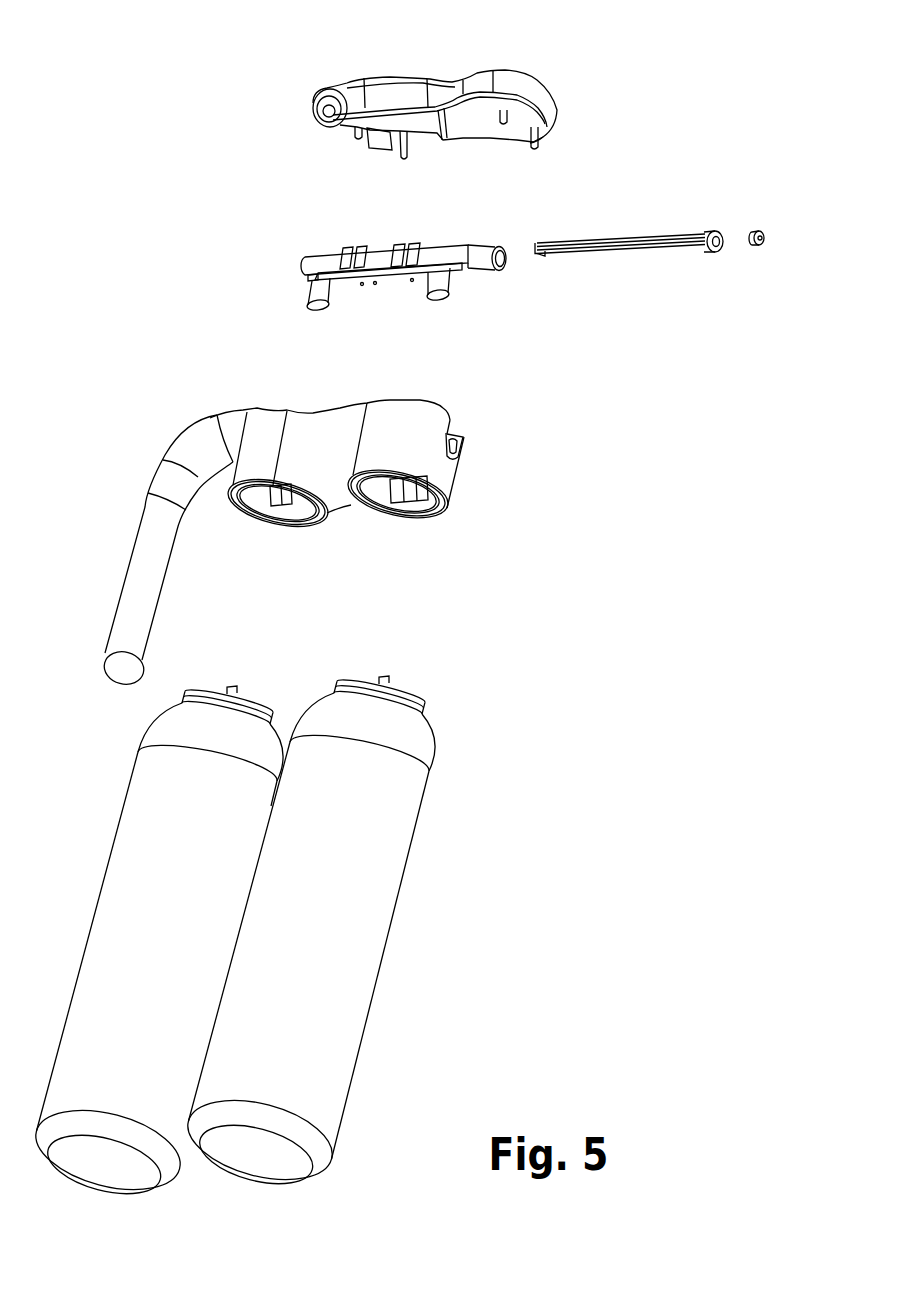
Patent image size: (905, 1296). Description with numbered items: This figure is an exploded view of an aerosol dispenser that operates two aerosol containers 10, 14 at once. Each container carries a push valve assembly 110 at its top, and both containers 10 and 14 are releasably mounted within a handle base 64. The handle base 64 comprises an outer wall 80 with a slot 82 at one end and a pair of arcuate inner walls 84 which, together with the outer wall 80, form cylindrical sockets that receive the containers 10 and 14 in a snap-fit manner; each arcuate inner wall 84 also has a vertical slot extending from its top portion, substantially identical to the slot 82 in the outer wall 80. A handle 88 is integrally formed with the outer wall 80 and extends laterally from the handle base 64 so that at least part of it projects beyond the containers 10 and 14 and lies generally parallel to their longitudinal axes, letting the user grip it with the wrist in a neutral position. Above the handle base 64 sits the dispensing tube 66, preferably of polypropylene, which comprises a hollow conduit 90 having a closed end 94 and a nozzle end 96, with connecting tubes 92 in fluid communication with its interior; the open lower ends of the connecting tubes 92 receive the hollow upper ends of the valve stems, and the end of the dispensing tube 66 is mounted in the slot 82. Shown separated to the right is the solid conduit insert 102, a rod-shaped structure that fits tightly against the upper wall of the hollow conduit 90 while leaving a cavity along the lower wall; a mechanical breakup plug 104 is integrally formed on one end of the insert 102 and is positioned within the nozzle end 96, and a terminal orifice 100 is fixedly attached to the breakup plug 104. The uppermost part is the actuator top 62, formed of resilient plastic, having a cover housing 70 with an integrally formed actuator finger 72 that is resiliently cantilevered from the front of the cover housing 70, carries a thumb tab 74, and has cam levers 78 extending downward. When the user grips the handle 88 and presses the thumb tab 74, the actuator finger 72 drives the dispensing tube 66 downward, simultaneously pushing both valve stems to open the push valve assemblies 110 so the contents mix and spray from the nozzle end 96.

The aerosol container 10 is at (143, 783).
The aerosol container 14 is at (400, 852).
The actuator top 62 is at (520, 70).
The handle base 64 is at (445, 482).
The dispensing tube 66 is at (300, 252).
The cover housing 70 is at (540, 97).
The actuator finger 72 is at (340, 88).
The thumb tab 74 is at (329, 112).
The cam levers 78 is at (450, 128).
The outer wall 80 is at (442, 470).
The slot 82 is at (455, 432).
The arcuate inner walls 84 is at (328, 499).
The handle 88 is at (155, 545).
The hollow conduit 90 is at (499, 254).
The connecting tubes 92 is at (318, 290).
The closed end 94 is at (300, 268).
The nozzle end 96 is at (503, 267).
The terminal orifice 100 is at (762, 232).
The solid conduit insert 102 is at (670, 235).
The mechanical breakup plug 104 is at (713, 240).
The push valve assembly 110 is at (240, 685).